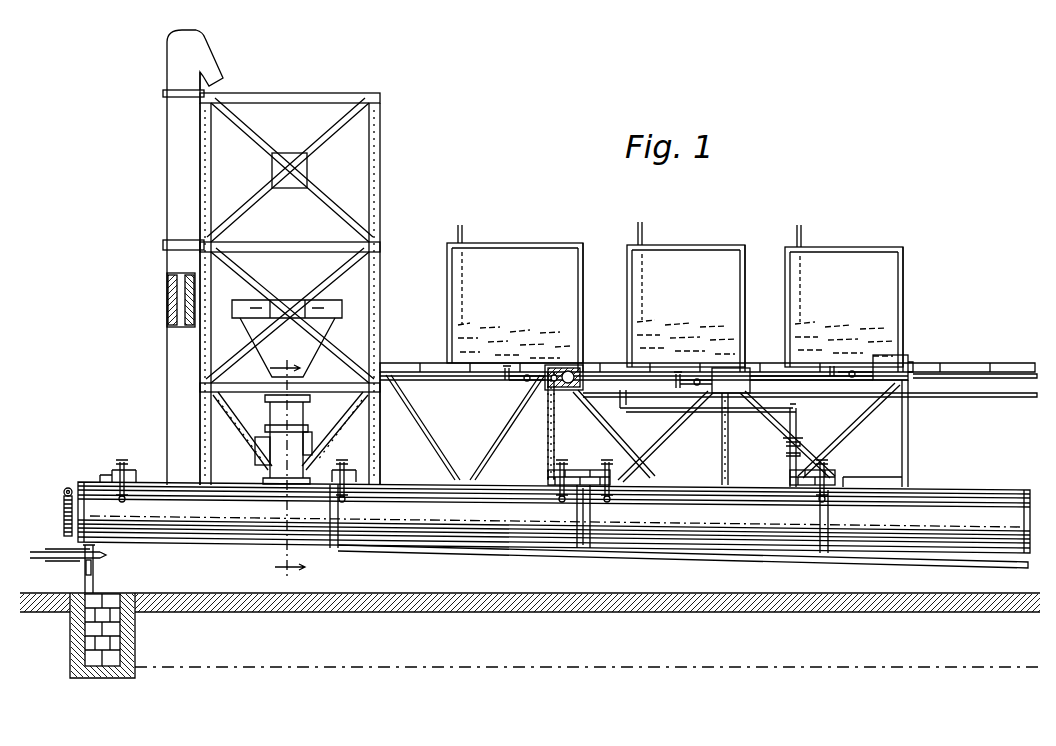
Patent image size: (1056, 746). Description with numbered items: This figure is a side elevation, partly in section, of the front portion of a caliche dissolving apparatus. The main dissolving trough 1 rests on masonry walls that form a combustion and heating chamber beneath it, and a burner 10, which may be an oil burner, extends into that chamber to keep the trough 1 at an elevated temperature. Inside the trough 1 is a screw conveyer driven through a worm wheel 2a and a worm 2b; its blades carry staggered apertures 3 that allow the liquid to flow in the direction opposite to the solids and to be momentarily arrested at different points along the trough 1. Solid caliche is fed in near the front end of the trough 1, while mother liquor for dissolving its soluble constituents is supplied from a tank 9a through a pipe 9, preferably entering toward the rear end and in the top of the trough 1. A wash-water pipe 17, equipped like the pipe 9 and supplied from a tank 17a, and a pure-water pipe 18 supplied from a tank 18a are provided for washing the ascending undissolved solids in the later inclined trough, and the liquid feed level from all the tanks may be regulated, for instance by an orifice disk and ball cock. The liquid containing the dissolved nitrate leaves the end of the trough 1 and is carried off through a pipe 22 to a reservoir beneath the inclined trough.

The trough 1 is at (950, 520).
The worm wheel 2a is at (64, 510).
The worm 2b is at (65, 490).
The apertures 3 is at (287, 464).
The pipe 9 is at (797, 434).
The tank 9a is at (507, 268).
The burner 10 is at (62, 557).
The pipe 17 is at (975, 398).
The tank 17a is at (687, 262).
The pipe 18 is at (965, 375).
The tank 18a is at (845, 262).
The pipe 22 is at (852, 560).